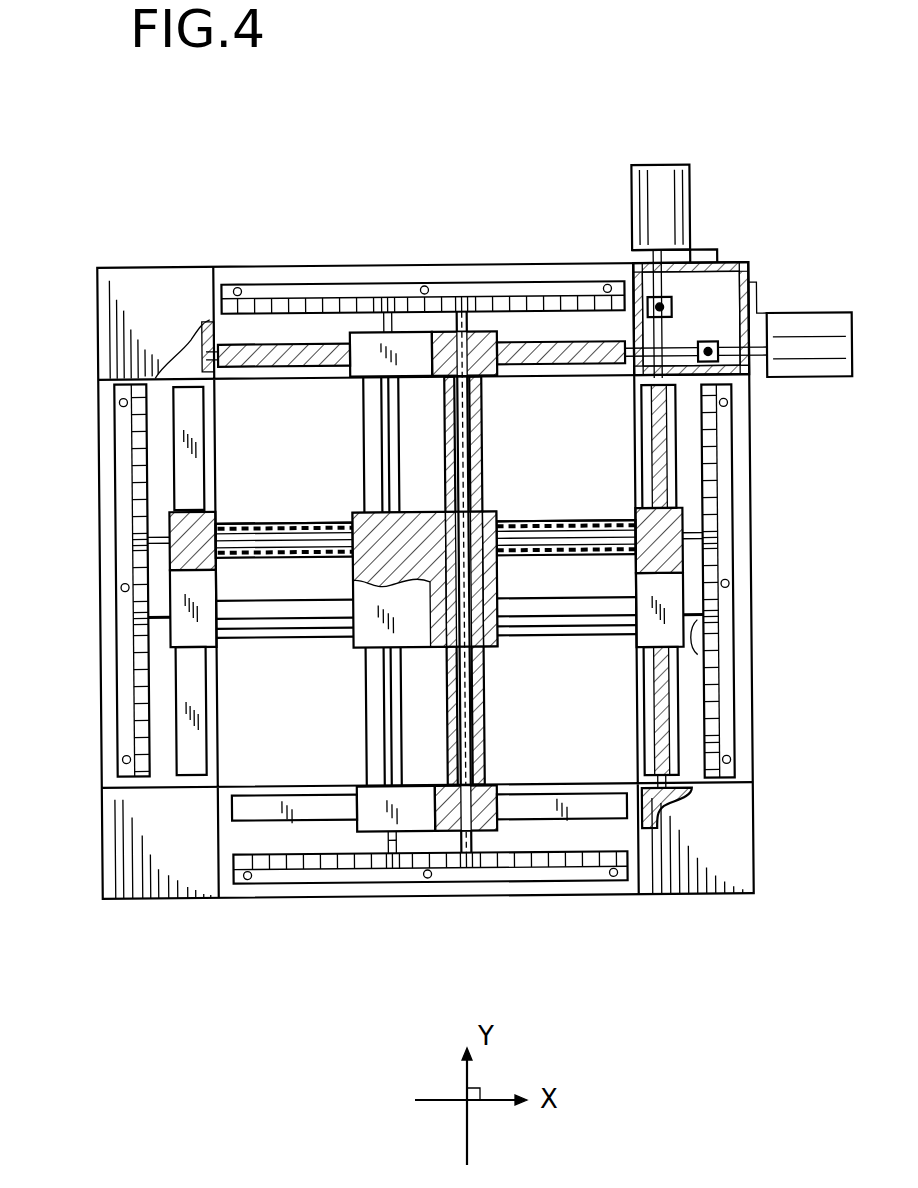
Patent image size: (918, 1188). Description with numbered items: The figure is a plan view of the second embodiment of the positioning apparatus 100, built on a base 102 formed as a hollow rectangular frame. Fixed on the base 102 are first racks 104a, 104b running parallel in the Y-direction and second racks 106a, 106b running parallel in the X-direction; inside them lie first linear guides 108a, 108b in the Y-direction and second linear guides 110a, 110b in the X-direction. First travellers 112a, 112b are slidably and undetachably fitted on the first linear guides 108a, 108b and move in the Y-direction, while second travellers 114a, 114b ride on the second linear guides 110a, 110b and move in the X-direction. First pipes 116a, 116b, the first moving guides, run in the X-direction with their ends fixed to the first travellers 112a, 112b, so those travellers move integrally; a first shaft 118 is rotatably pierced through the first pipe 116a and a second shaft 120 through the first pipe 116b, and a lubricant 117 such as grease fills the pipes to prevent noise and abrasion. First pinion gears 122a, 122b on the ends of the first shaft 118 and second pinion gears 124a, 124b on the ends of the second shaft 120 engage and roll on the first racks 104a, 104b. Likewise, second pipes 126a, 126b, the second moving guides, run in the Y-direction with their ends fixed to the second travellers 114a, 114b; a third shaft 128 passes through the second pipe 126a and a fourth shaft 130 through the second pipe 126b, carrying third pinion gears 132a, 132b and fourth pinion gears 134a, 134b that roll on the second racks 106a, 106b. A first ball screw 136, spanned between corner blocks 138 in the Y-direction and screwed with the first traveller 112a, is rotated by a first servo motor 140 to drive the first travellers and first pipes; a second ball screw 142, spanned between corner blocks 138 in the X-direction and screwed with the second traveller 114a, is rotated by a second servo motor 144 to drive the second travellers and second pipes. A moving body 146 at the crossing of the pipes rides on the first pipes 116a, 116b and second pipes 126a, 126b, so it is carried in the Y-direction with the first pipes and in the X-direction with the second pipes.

The stage apparatus 100 is at (256, 186).
The base 102 is at (752, 701).
The first rack 104a is at (715, 458).
The first rack 104b is at (137, 457).
The second rack 106a is at (320, 300).
The second rack 106b is at (305, 882).
The first linear guide 108a is at (703, 745).
The first linear guide 108b is at (188, 700).
The second linear guide 110a is at (562, 338).
The second linear guide 110b is at (613, 822).
The first traveller 112a is at (675, 590).
The first traveller 112b is at (190, 648).
The second traveller 114a is at (432, 335).
The second traveller 114b is at (428, 834).
The first pipe 116a is at (588, 523).
The first pipe 116b is at (584, 620).
The lubricant 117 is at (560, 768).
The first shaft 118 is at (528, 523).
The second shaft 120 is at (697, 657).
The first pinion gear 122a is at (709, 536).
The first pinion gear 122b is at (147, 540).
The second pinion gear 124a is at (707, 618).
The second pinion gear 124b is at (143, 620).
The second pipe 126a is at (486, 765).
The second pipe 126b is at (378, 738).
The third shaft 128 is at (452, 690).
The fourth shaft 130 is at (390, 844).
The third pinion gear 132a is at (464, 308).
The third pinion gear 132b is at (473, 834).
The fourth pinion gear 134a is at (410, 348).
The fourth pinion gear 134b is at (390, 836).
The first ball screw 136 is at (664, 431).
The corner block 138 is at (143, 290).
The first servo motor 140 is at (680, 200).
The second ball screw 142 is at (303, 366).
The second servo motor 144 is at (805, 340).
The moving body 146 is at (500, 580).